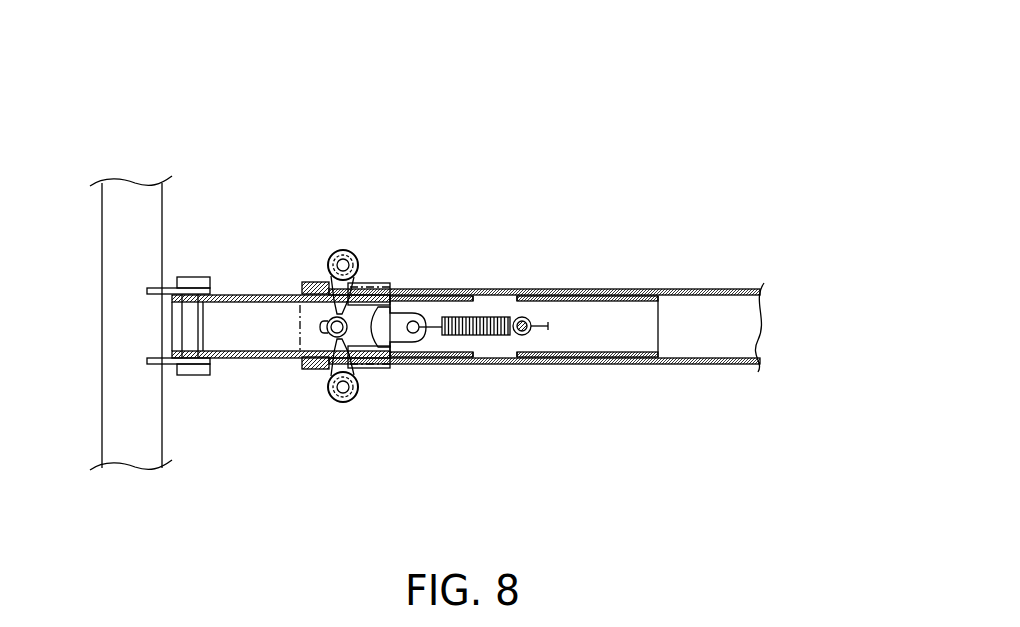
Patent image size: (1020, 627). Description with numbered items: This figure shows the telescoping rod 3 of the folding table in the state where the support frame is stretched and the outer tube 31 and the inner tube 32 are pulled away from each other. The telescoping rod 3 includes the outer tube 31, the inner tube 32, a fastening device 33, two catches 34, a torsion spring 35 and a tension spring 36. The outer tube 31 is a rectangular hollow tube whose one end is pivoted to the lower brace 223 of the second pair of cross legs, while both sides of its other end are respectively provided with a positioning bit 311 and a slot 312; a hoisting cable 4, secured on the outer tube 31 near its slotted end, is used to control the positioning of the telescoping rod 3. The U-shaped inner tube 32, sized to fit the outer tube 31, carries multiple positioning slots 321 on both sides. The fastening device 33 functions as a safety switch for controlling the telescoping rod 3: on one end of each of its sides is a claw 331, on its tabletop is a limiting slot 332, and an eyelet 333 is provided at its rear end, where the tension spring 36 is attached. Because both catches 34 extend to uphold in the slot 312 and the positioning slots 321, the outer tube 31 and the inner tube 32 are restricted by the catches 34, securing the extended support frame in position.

The telescoping rod 3 is at (600, 379).
The hoisting cable 4 is at (547, 290).
The outer tube 31 is at (683, 290).
The inner tube 32 is at (212, 327).
The fastening device 33 is at (360, 347).
The catch 34 is at (305, 270).
The torsion spring 35 is at (345, 255).
The tension spring 36 is at (490, 337).
The lower brace 223 is at (152, 220).
The positioning bit 311 is at (350, 275).
The slot 312 is at (378, 288).
The positioning slot 321 is at (305, 285).
The claw 331 is at (298, 284).
The limiting slot 332 is at (300, 332).
The eyelet 333 is at (410, 333).